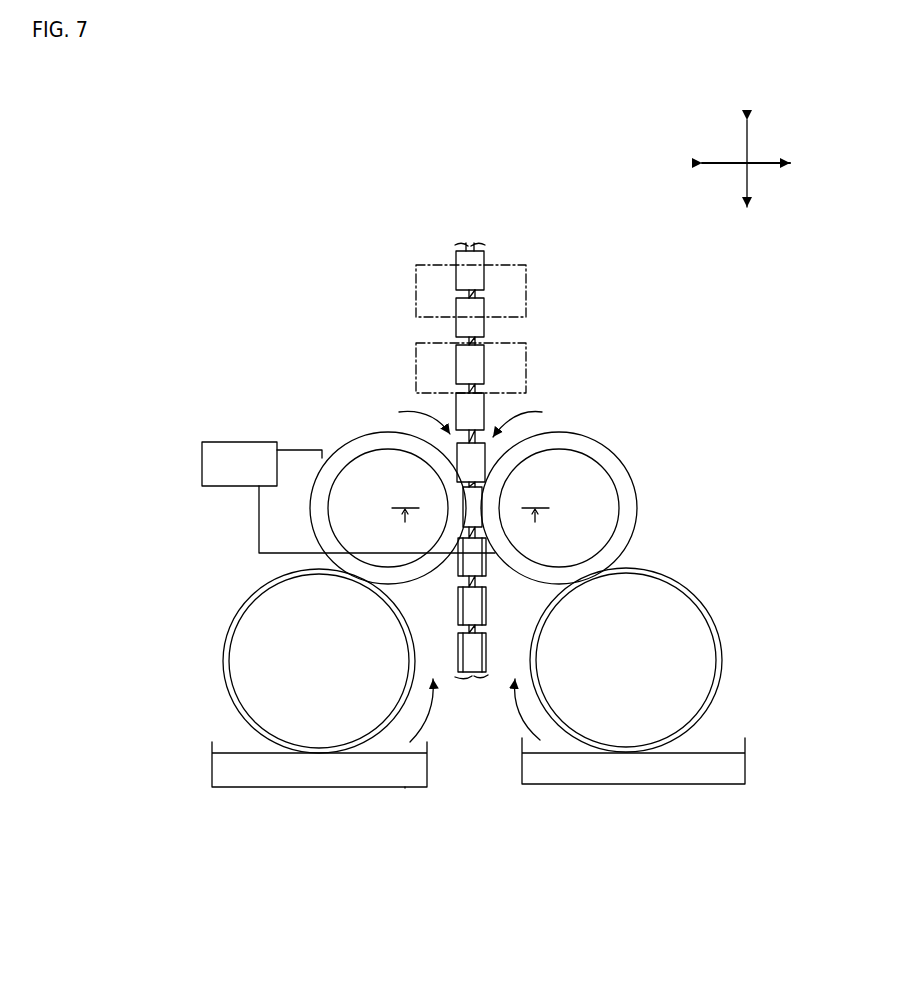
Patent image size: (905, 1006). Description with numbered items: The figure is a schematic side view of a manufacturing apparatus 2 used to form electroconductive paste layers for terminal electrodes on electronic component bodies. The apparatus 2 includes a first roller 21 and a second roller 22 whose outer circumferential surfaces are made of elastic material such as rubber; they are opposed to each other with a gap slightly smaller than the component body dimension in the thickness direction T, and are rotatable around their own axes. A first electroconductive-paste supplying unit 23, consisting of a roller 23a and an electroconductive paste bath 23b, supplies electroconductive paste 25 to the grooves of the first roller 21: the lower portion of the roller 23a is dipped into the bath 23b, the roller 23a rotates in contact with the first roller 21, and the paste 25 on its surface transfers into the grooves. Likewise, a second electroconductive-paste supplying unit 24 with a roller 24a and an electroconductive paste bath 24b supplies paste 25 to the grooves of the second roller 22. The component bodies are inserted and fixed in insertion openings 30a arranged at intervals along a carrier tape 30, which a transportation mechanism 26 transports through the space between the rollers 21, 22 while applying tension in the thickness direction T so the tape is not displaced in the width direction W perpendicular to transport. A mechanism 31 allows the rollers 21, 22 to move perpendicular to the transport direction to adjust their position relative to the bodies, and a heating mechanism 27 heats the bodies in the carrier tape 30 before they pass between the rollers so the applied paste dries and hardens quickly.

The manufacturing apparatus 2 is at (559, 247).
The first roller 21 is at (335, 456).
The second roller 22 is at (593, 438).
The first electroconductive-paste supplying unit 23 is at (264, 573).
The roller 23a is at (232, 628).
The electroconductive paste bath 23b is at (405, 788).
The second electroconductive-paste supplying unit 24 is at (674, 563).
The roller 24a is at (703, 600).
The electroconductive paste bath 24b is at (723, 784).
The electroconductive paste 25 is at (228, 753).
The transportation mechanism 26 is at (410, 287).
The heating mechanism 27 is at (412, 358).
The carrier tape 30 is at (478, 294).
The insertion openings 30a is at (472, 291).
The mechanism 31 is at (199, 456).
The width direction W is at (770, 163).
The thickness direction T is at (750, 188).